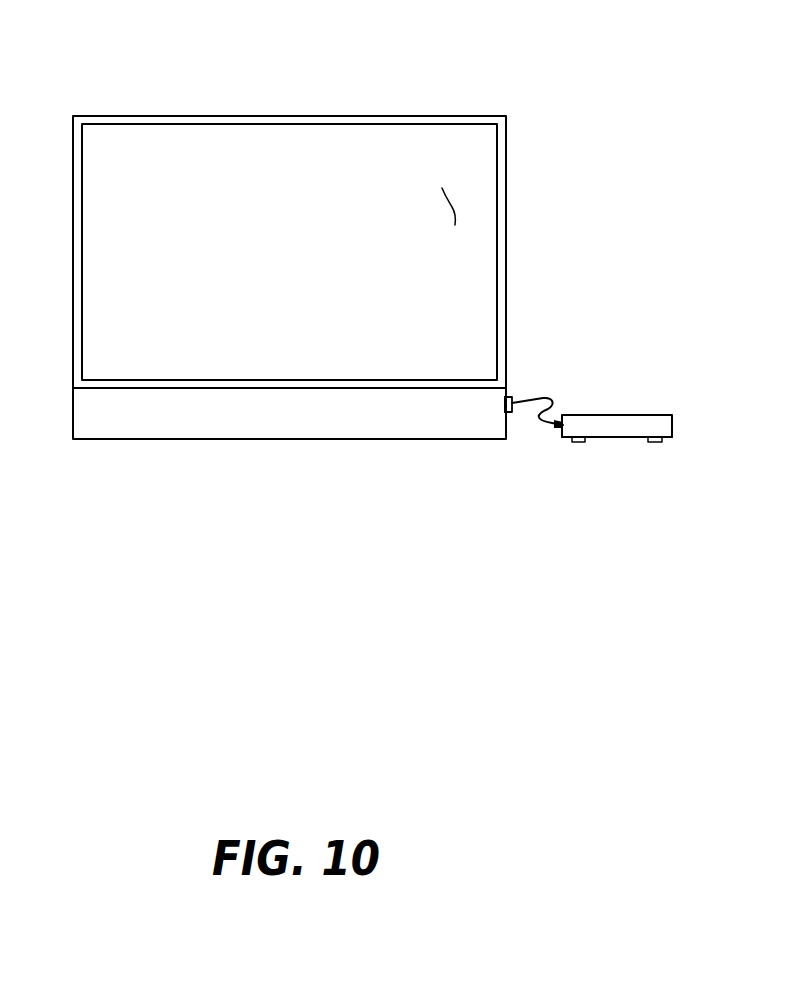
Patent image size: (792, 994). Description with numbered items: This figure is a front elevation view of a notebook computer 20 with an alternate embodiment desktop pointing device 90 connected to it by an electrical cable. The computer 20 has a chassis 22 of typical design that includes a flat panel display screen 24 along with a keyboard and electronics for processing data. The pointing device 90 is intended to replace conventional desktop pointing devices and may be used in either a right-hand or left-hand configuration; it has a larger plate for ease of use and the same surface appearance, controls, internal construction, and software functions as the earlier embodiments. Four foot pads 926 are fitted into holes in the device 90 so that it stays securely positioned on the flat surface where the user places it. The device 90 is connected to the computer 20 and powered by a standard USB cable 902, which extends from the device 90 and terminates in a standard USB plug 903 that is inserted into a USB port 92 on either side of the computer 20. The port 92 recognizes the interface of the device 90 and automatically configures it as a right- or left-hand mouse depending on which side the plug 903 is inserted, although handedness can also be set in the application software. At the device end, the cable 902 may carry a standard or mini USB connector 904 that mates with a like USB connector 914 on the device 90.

The notebook computer 20 is at (334, 78).
The chassis 22 is at (292, 442).
The flat panel display screen 24 is at (453, 205).
The pointing device 90 is at (658, 415).
The USB port 92 is at (505, 405).
The USB cable 902 is at (545, 398).
The USB plug 903 is at (510, 397).
The USB connector 904 is at (559, 424).
The USB connector 914 is at (563, 436).
The foot pads 926 is at (582, 442).